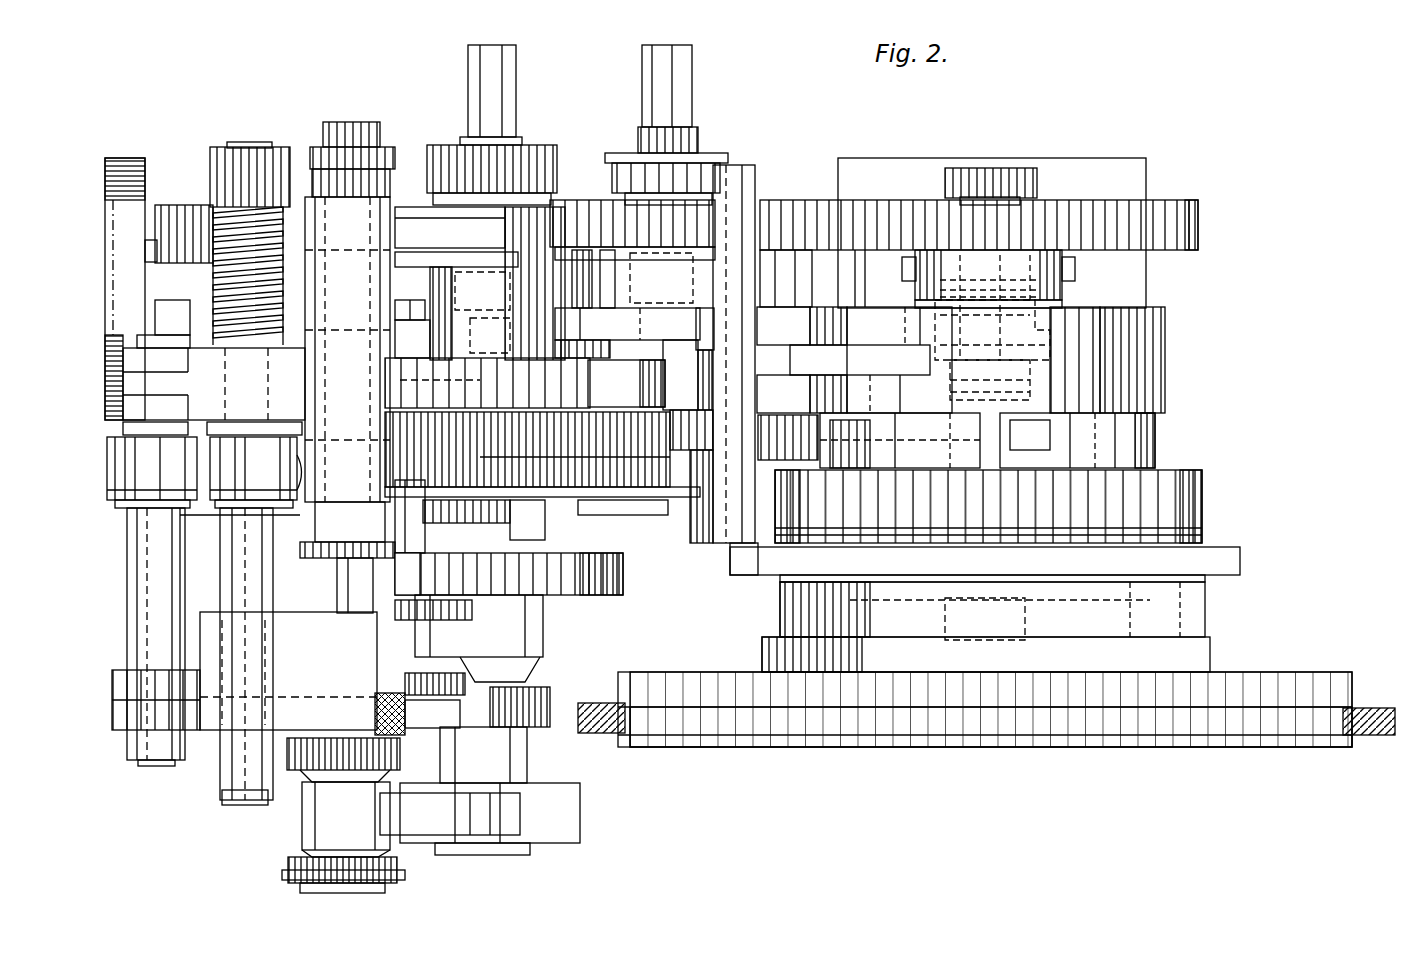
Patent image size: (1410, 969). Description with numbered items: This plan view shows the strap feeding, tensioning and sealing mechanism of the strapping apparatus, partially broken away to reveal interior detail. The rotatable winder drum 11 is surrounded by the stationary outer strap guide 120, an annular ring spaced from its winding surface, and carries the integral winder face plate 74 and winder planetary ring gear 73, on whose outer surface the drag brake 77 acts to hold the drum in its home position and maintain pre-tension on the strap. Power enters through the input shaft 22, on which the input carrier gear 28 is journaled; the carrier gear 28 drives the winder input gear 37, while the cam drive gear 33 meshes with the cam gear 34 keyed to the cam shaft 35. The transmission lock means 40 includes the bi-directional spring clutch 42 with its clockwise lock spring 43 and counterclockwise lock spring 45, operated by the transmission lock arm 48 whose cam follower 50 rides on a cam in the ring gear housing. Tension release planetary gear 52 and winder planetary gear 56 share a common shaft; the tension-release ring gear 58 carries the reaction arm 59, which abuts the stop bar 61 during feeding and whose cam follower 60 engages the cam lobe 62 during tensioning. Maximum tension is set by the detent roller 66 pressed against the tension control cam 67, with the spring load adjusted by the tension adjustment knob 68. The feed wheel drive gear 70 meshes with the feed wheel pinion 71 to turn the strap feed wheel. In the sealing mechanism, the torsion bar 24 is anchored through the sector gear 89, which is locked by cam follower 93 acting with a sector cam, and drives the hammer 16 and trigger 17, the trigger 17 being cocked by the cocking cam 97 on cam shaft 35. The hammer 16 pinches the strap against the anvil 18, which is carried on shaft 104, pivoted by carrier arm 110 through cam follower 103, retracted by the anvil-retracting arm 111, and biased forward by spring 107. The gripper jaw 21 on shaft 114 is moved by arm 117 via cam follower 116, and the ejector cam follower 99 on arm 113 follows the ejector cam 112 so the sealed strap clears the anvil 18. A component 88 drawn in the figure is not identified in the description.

The winder drum 11 is at (1245, 670).
The hammer 16 is at (403, 730).
The trigger 17 is at (510, 825).
The anvil 18 is at (345, 680).
The gripper jaw 21 is at (125, 720).
The input shaft 22 is at (682, 72).
The torsion bar 24 is at (345, 598).
The input carrier gear 28 is at (585, 210).
The cam drive gear 33 is at (790, 455).
The cam gear 34 is at (600, 490).
The cam shaft 35 is at (480, 92).
The winder input gear 37 is at (1185, 210).
The transmission lock means 40 is at (1045, 325).
The bi-directional spring clutch 42 is at (1040, 325).
The clockwise lock spring 43 is at (935, 325).
The counterclockwise lock spring 45 is at (1030, 385).
The transmission lock arm 48 is at (890, 420).
The cam follower 50 is at (700, 400).
The tension release planetary gear 52 is at (1090, 362).
The winder planetary gear 56 is at (1090, 440).
The tension-release ring gear 58 is at (1160, 365).
The reaction arm 59 is at (850, 355).
The cam follower 60 is at (700, 320).
The stop bar 61 is at (722, 530).
The cam lobe 62 is at (660, 338).
The detent roller 66 is at (440, 288).
The tension control cam 67 is at (572, 285).
The tension adjustment knob 68 is at (120, 268).
The feed wheel drive gear 70 is at (1135, 590).
The feed wheel pinion 71 is at (965, 645).
The winder planetary ring gear 73 is at (1155, 470).
The winder face plate 74 is at (1290, 745).
The drag brake 77 is at (1155, 430).
The bushing 88 is at (375, 713).
The sector gear 89 is at (298, 215).
The cam follower 93 is at (485, 238).
The cocking cam 97 is at (570, 832).
The ejector cam follower 99 is at (440, 575).
The cam follower 103 is at (487, 383).
The shaft 104 is at (255, 598).
The spring 107 is at (215, 213).
The carrier arm 110 is at (296, 325).
The anvil-retracting arm 111 is at (203, 365).
The ejector cam 112 is at (578, 588).
The arm 113 is at (472, 607).
The shaft 114 is at (138, 627).
The cam follower 116 is at (545, 480).
The arm 117 is at (452, 510).
The outer strap guide 120 is at (1375, 708).